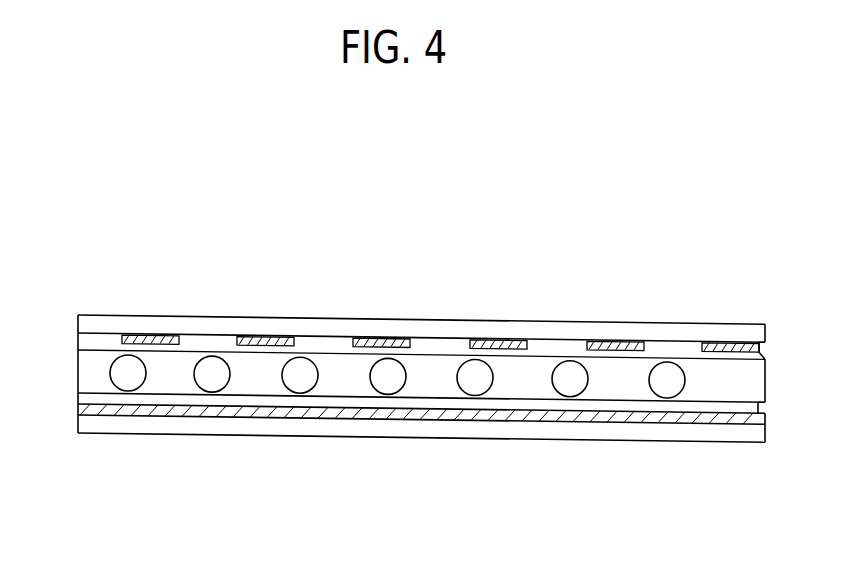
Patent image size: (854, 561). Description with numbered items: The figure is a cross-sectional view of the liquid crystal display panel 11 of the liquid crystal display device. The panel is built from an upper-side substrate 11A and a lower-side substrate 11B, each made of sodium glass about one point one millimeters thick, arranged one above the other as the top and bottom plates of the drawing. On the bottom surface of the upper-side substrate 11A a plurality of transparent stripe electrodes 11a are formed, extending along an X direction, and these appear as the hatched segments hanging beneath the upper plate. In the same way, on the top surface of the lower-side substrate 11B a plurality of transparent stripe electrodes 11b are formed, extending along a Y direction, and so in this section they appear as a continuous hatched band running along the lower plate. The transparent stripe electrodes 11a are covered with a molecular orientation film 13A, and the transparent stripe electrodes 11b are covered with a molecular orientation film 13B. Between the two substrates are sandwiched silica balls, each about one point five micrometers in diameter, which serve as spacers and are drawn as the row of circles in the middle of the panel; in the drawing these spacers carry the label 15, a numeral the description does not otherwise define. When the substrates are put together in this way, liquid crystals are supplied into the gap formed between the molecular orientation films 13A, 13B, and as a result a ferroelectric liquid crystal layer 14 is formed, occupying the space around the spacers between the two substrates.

The liquid crystal display panel 11 is at (478, 210).
The upper-side substrate 11A is at (673, 332).
The lower-side substrate 11B is at (675, 430).
The transparent stripe electrodes 11a is at (367, 338).
The transparent stripe electrodes 11b is at (82, 412).
The molecular orientation film 13A is at (760, 355).
The molecular orientation film 13B is at (763, 405).
The ferroelectric liquid crystal layer 14 is at (92, 383).
The spacers 15 is at (120, 370).